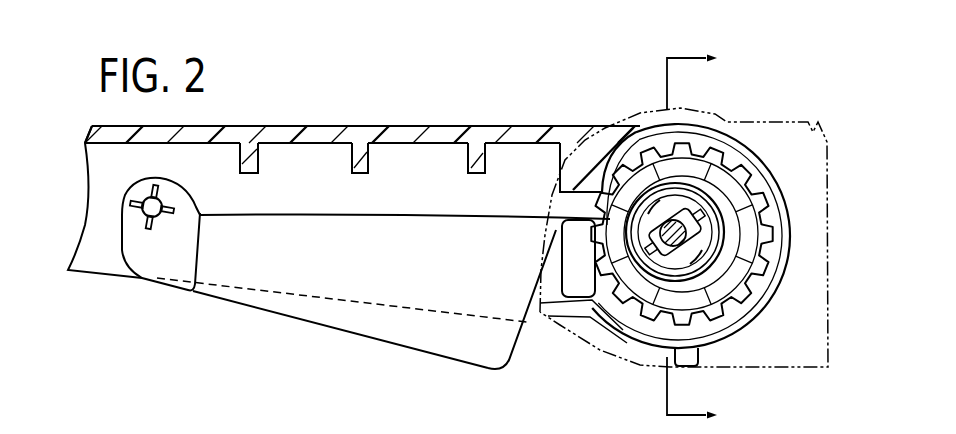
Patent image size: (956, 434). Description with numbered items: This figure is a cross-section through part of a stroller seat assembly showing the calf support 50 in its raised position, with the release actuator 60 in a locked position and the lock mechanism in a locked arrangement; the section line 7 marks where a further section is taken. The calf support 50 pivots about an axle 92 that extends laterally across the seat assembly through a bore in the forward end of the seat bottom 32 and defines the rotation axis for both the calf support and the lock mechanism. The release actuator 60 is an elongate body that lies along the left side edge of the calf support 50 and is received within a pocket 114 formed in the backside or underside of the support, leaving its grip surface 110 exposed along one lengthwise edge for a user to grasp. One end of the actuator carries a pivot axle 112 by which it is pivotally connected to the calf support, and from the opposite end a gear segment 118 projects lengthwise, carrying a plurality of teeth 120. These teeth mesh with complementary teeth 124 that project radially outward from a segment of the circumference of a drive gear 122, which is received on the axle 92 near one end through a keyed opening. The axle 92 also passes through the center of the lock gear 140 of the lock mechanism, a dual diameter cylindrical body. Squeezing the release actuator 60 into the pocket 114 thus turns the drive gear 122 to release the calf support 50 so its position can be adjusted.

The section line 7- 7 is at (704, 235).
The seat bottom 32 is at (817, 121).
The calf support 50 is at (80, 280).
The release actuator 60 is at (300, 327).
The axle 92 is at (716, 224).
The grip surface 110 is at (398, 344).
The pivot axle 112 is at (149, 200).
The pocket 114 is at (312, 194).
The gear segment 118 is at (580, 316).
The teeth 120 is at (602, 306).
The drive gear 122 is at (722, 212).
The complementary teeth 124 is at (624, 175).
The lock gear 140 is at (742, 240).